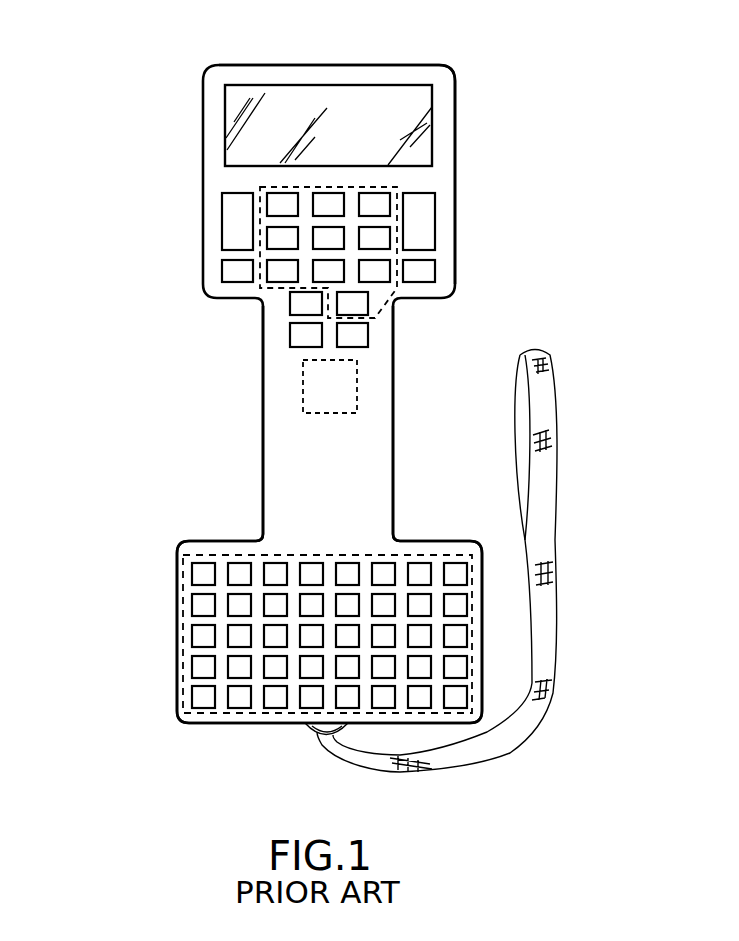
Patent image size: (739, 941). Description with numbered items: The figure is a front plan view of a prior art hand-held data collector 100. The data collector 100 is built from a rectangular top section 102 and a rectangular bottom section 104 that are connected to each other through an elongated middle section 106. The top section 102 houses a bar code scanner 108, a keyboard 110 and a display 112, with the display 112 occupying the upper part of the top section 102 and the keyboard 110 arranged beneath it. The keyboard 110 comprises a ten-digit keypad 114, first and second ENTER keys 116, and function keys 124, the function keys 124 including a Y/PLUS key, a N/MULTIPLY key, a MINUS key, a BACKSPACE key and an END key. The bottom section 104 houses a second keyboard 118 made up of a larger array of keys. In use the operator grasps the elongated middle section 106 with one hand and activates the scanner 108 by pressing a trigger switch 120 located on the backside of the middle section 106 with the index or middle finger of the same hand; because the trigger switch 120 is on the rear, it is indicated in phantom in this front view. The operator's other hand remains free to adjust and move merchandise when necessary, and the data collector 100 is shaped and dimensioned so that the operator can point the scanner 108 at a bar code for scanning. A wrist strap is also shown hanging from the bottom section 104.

The hand-held data collector 100 is at (507, 45).
The top section 102 is at (213, 173).
The bottom section 104 is at (180, 593).
The elongated middle section 106 is at (273, 477).
The bar code scanner 108 is at (203, 70).
The keyboard 110 is at (467, 223).
The display 112 is at (434, 106).
The 10-digit keypad 114 is at (385, 300).
The ENTER keys 116 is at (232, 222).
The second keyboard 118 is at (185, 575).
The trigger switch 120 is at (303, 398).
The function keys 124 is at (228, 271).